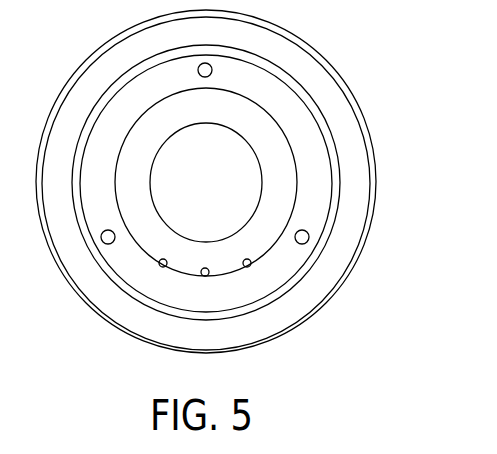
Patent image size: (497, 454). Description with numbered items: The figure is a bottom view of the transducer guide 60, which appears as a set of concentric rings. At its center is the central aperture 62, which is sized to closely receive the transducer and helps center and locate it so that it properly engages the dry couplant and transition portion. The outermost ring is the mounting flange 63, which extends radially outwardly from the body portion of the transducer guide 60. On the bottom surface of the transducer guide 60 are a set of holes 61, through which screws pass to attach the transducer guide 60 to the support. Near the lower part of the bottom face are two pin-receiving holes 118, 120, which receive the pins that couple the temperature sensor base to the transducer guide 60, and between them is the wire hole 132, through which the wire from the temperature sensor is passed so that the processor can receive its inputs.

The transducer guide 60 is at (358, 160).
The holes 61 is at (198, 69).
The central aperture 62 is at (205, 147).
The mounting flange 63 is at (342, 105).
The pin-receiving hole 118 is at (162, 267).
The pin-receiving hole 120 is at (248, 267).
The wire hole 132 is at (204, 276).